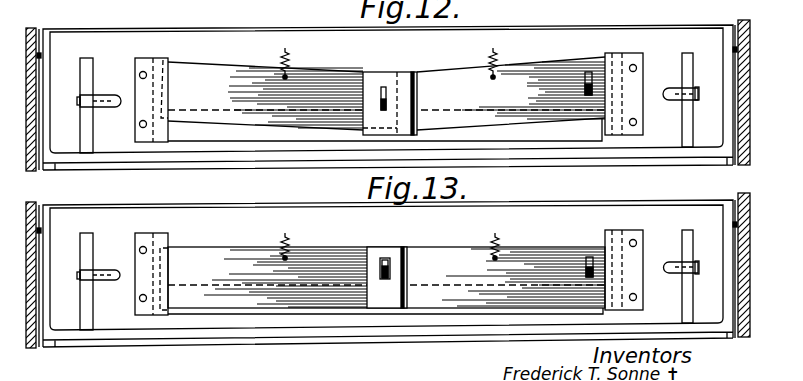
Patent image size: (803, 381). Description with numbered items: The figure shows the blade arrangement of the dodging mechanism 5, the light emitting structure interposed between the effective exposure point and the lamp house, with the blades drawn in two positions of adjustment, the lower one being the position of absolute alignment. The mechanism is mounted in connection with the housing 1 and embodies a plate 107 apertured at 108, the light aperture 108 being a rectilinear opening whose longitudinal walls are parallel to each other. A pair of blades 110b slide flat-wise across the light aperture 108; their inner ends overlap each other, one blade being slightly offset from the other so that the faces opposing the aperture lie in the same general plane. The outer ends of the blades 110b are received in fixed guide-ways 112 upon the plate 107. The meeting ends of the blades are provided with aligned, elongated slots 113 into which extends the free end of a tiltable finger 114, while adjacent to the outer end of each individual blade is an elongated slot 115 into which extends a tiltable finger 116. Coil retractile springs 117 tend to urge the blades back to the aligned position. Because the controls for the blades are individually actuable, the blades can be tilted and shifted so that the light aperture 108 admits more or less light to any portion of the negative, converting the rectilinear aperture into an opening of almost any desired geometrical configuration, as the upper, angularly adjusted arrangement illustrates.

In FIG. 12, the housing 1 is at (25, 165).
In FIG. 13, the housing 1 is at (25, 213).
In FIG. 12, the dodging mechanism 5 is at (412, 62).
In FIG. 13, the dodging mechanism 5 is at (416, 242).
In FIG. 12, the plate 107 is at (127, 163).
In FIG. 13, the plate 107 is at (115, 333).
In FIG. 12, the light aperture 108 is at (278, 132).
In FIG. 13, the light aperture 108 is at (333, 313).
In FIG. 12, the blade 110b is at (386, 93).
In FIG. 13, the blade 110b is at (386, 277).
In FIG. 12, the fixed guide-ways 112 is at (640, 74).
In FIG. 13, the fixed guide-ways 112 is at (150, 238).
In FIG. 12, the elongated slots 113 is at (386, 86).
In FIG. 13, the elongated slots 113 is at (388, 264).
In FIG. 13, the tiltable finger 114 is at (383, 278).
In FIG. 12, the elongated slot 115 is at (590, 72).
In FIG. 13, the tiltable finger 116 is at (588, 272).
In FIG. 12, the coil retractile springs 117 is at (289, 58).
In FIG. 13, the coil retractile springs 117 is at (290, 238).